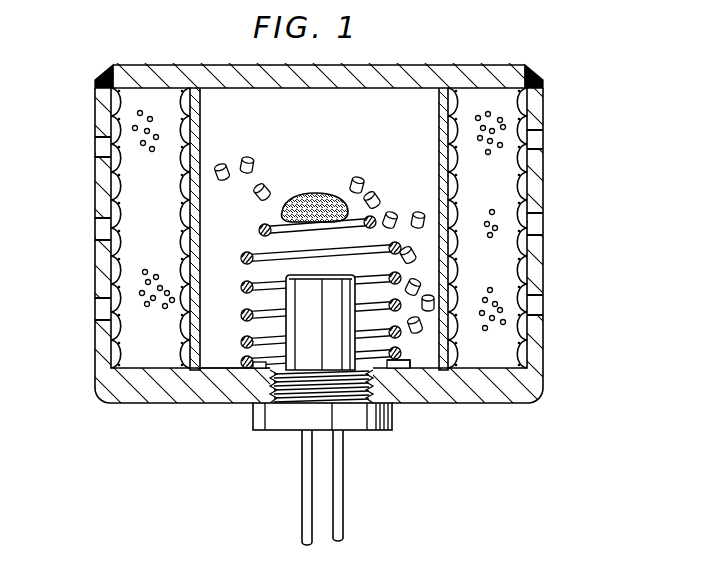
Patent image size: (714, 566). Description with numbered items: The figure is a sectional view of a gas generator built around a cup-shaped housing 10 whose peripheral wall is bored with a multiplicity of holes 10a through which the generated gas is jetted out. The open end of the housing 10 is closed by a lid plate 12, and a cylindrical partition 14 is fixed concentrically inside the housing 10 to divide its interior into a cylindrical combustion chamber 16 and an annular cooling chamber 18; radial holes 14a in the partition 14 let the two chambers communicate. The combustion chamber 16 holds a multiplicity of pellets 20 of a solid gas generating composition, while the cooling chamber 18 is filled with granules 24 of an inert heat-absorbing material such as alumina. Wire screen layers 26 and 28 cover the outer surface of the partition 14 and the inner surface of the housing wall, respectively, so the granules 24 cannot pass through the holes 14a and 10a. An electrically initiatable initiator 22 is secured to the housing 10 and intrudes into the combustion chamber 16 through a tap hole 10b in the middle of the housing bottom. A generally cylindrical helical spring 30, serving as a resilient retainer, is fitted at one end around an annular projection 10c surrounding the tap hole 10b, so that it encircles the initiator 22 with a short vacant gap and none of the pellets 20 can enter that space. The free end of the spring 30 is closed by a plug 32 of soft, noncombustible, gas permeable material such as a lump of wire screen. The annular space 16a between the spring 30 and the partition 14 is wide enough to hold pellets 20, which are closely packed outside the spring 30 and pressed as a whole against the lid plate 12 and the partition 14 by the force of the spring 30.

The cup-shaped housing 10 is at (507, 383).
The holes 10a is at (103, 229).
The tap hole 10b is at (396, 364).
The annular projection 10c is at (390, 359).
The lid plate 12 is at (458, 72).
The cylindrical partition 14 is at (199, 122).
The radial holes 14a is at (200, 137).
The combustion chamber 16 is at (369, 129).
The annular space 16a is at (227, 357).
The cooling chamber 18 is at (158, 189).
The pellets 20 is at (222, 181).
The initiator 22 is at (375, 417).
The granules 24 is at (150, 305).
The wire screen layer 26 is at (458, 278).
The wire screen layer 28 is at (522, 335).
The helical spring 30 is at (242, 286).
The plug 32 is at (318, 193).